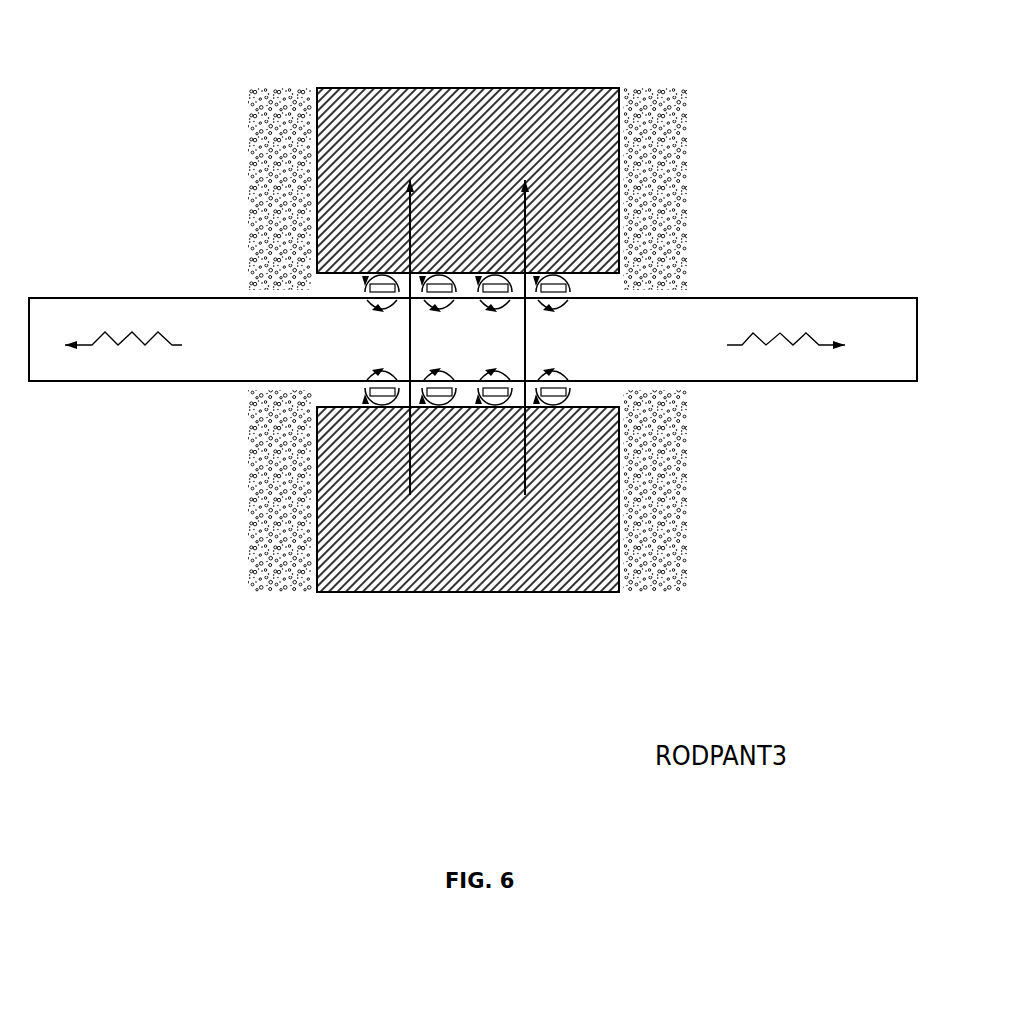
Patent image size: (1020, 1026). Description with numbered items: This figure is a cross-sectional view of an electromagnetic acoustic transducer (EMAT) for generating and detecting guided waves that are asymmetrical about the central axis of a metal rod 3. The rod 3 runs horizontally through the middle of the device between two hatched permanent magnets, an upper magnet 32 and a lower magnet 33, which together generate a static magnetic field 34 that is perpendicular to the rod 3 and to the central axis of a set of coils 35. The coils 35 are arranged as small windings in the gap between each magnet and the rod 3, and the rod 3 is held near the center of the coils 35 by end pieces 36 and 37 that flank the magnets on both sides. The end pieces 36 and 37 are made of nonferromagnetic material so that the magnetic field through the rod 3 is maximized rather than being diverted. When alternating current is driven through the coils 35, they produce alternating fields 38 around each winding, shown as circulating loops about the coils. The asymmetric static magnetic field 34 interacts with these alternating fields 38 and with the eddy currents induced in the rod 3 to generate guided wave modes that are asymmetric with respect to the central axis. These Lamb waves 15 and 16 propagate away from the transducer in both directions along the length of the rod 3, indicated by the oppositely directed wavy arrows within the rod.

The rod 3 is at (77, 297).
The Lamb wave 15 is at (118, 345).
The Lamb wave 16 is at (782, 328).
The magnet 32 is at (353, 123).
The magnet 33 is at (532, 550).
The static magnetic field 34 is at (527, 237).
The set of coils 35 is at (558, 398).
The end piece 36 is at (280, 565).
The end piece 37 is at (676, 247).
The alternating fields 38 is at (560, 313).